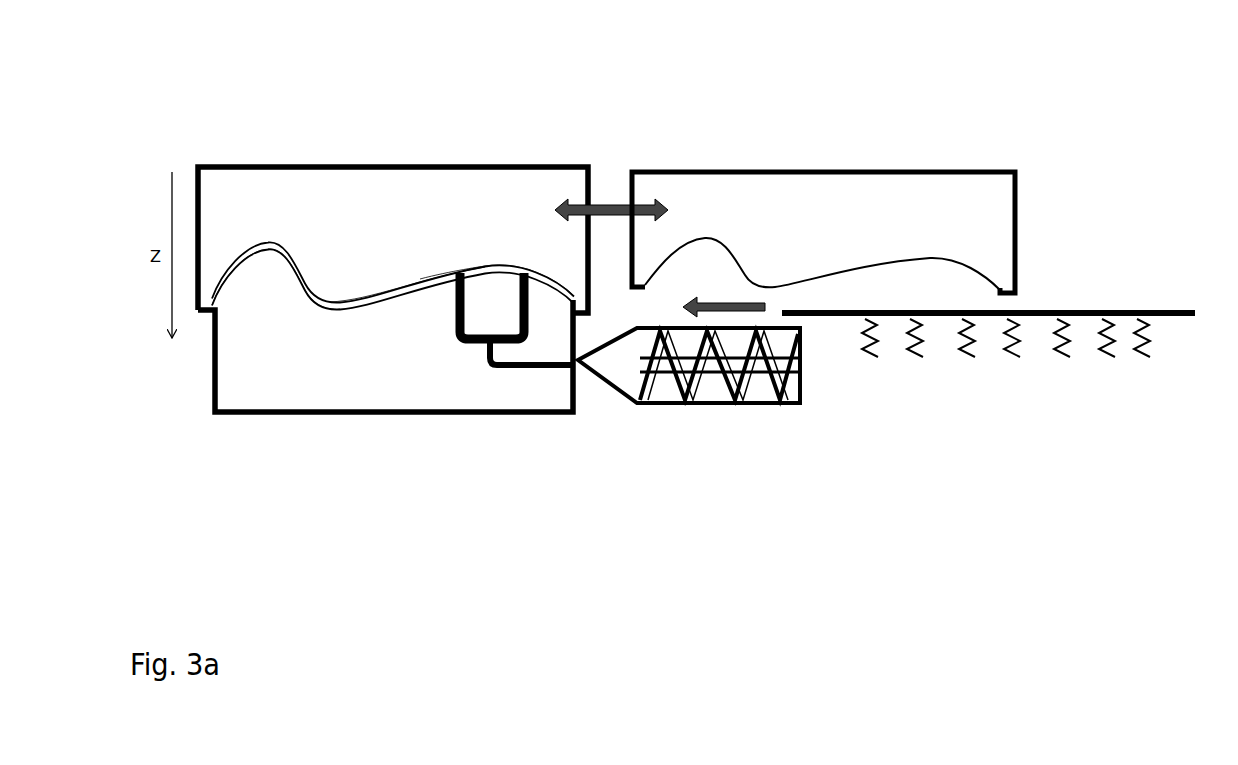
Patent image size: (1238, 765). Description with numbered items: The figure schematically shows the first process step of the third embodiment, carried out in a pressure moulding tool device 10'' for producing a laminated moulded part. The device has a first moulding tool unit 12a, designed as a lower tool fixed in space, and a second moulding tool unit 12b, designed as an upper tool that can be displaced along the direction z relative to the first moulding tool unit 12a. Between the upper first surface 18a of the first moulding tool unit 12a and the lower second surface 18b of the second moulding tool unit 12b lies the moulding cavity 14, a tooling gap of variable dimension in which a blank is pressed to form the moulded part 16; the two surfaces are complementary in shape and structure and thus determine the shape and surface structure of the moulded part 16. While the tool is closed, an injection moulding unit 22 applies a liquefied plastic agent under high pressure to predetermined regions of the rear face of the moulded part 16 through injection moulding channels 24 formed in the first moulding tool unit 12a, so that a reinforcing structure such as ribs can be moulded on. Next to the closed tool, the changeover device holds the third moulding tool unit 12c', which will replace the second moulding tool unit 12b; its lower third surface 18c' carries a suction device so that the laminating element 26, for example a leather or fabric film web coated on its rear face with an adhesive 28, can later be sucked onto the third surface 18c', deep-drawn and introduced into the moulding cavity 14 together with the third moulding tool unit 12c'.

The pressure moulding tool device 10'' is at (650, 282).
The first moulding tool unit 12a is at (418, 387).
The second moulding tool unit 12b is at (428, 187).
The third moulding tool unit 12c' is at (823, 186).
The moulding cavity 14 is at (268, 243).
The moulded part 16 is at (380, 292).
The first surface 18a is at (315, 308).
The second surface 18b is at (490, 262).
The third surface 18c' is at (886, 241).
The injection moulding unit 22 is at (752, 416).
The injection moulding channels 24 is at (548, 370).
The laminating element 26 is at (1173, 317).
The adhesive 28 is at (1002, 367).